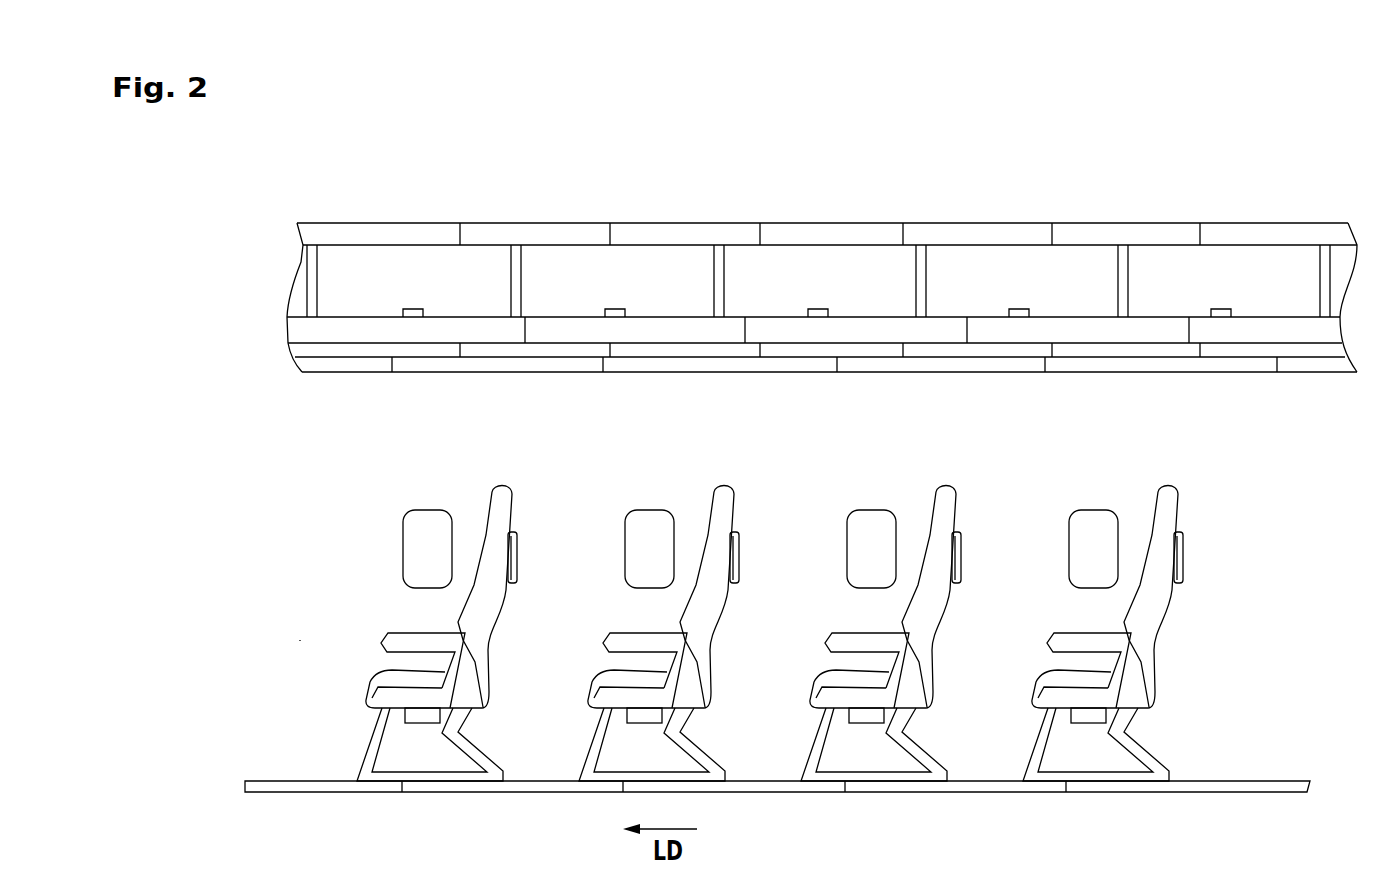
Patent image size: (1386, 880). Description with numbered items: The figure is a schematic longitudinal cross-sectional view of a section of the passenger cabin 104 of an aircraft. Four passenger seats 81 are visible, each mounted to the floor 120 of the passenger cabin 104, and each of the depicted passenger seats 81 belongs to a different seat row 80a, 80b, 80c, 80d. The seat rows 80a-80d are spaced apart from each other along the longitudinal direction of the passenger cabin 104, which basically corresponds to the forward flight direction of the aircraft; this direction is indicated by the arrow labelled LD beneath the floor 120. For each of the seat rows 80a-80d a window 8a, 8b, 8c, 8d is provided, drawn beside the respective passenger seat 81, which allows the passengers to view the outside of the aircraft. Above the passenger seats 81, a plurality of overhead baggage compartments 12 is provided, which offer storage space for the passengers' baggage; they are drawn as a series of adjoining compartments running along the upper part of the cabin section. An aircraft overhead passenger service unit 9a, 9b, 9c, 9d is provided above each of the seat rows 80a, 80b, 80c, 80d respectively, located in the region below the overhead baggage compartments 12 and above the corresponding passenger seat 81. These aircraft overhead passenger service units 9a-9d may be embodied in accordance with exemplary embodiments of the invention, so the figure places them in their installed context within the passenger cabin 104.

The overhead baggage compartment 12 is at (443, 268).
The aircraft overhead passenger service unit 9a is at (471, 389).
The aircraft overhead passenger service unit 9b is at (693, 389).
The aircraft overhead passenger service unit 9c is at (915, 389).
The aircraft overhead passenger service unit 9d is at (1137, 389).
The window 8a is at (412, 533).
The window 8b is at (634, 533).
The window 8c is at (856, 533).
The window 8d is at (1078, 533).
The seat row 80a is at (374, 618).
The seat row 80b is at (596, 618).
The seat row 80c is at (818, 618).
The seat row 80d is at (1040, 618).
The passenger seat 81 is at (505, 469).
The passenger cabin 104 is at (291, 636).
The floor 120 is at (1258, 780).